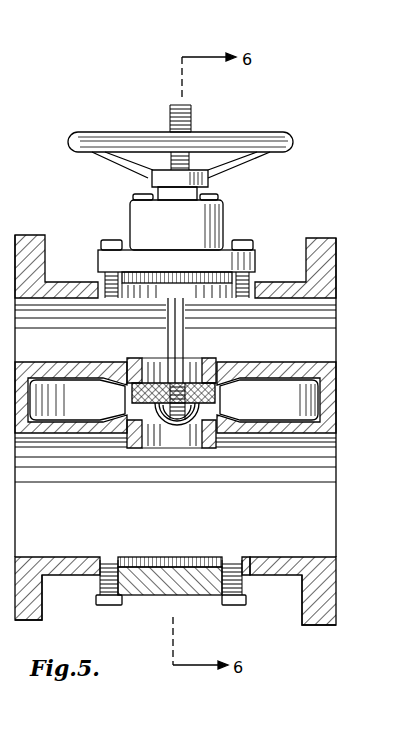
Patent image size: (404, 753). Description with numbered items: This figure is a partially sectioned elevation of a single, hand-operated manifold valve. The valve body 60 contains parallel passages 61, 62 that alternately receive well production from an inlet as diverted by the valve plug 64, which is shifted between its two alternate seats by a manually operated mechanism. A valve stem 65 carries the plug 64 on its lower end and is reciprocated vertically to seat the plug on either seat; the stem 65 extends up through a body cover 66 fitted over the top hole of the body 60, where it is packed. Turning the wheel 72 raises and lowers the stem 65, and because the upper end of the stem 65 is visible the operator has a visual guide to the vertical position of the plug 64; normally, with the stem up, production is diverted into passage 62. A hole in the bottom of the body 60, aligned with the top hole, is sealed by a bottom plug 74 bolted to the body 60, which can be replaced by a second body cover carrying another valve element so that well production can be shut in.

The valve body 60 is at (285, 578).
The parallel passage 61 is at (337, 346).
The parallel passage 62 is at (337, 522).
The valve plug 64 is at (216, 394).
The valve stem 65 is at (184, 345).
The body cover 66 is at (224, 221).
The wheel 72 is at (290, 134).
The bottom plug 74 is at (186, 597).